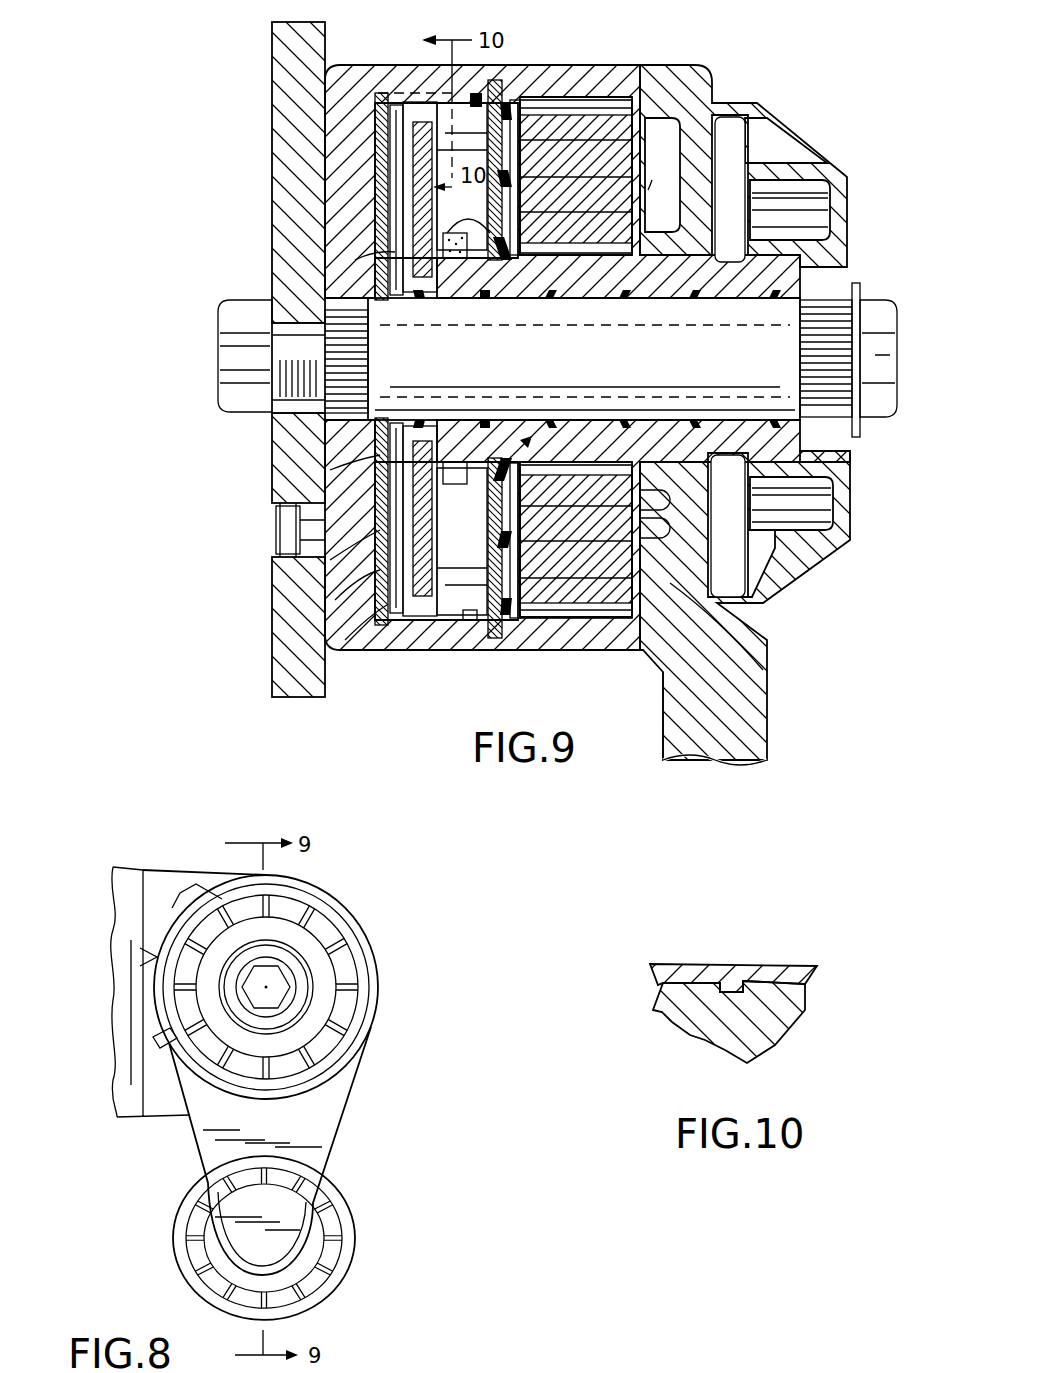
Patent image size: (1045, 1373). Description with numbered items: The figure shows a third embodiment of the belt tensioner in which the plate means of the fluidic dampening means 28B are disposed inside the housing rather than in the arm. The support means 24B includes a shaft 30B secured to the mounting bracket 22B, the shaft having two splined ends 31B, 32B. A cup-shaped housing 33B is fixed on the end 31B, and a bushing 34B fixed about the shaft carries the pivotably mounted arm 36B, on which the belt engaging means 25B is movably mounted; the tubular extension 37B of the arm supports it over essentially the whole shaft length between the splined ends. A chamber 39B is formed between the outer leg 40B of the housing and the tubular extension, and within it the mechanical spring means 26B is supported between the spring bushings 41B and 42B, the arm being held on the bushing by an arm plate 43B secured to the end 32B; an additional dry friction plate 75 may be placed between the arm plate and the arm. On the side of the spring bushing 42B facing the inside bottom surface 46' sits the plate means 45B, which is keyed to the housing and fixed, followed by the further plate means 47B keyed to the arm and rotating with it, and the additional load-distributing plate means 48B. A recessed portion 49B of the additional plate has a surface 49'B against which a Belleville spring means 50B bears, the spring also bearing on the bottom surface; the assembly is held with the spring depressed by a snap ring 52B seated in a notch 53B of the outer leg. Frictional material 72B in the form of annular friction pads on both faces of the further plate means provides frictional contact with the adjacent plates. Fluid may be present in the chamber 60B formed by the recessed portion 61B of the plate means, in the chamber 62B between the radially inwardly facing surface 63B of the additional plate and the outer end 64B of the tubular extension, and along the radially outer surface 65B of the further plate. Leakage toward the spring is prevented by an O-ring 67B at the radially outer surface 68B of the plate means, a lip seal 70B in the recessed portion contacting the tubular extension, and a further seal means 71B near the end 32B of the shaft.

In FIG. 9, the mounting bracket 22B is at (272, 172).
In FIG. 8, the mounting bracket 22B is at (137, 917).
In FIG. 9, the support means 24B is at (343, 98).
In FIG. 8, the belt engaging means 25B is at (355, 1222).
In FIG. 9, the mechanical spring means 26B is at (630, 100).
In FIG. 9, the fluidic dampening means 28B is at (397, 250).
In FIG. 9, the shaft 30B is at (643, 287).
In FIG. 9, the splined end 31B is at (347, 387).
In FIG. 9, the splined end 32B is at (858, 300).
In FIG. 9, the housing 33B is at (583, 653).
In FIG. 10, the housing 33B is at (773, 962).
In FIG. 9, the bushing 34B is at (683, 300).
In FIG. 9, the arm 36B is at (747, 703).
In FIG. 8, the arm 36B is at (323, 1120).
In FIG. 9, the tubular extension 37B is at (550, 250).
In FIG. 9, the chamber 39B is at (620, 617).
In FIG. 9, the outer leg 40B is at (622, 65).
In FIG. 9, the spring bushing 41B is at (645, 187).
In FIG. 9, the spring bushing 42B is at (502, 104).
In FIG. 9, the arm plate 43B is at (847, 195).
In FIG. 9, the plate means 45B is at (526, 443).
In FIG. 10, the plate means 45B is at (780, 1025).
In FIG. 9, the inside bottom surface 46' is at (374, 161).
In FIG. 9, the further plate means 47B is at (422, 652).
In FIG. 9, the additional load-distributing plate means 48B is at (387, 608).
In FIG. 9, the recessed portion 49B is at (380, 580).
In FIG. 9, the surface of recessed portion 49'B is at (292, 562).
In FIG. 9, the spring means 50B is at (297, 548).
In FIG. 9, the snap ring 52B is at (560, 572).
In FIG. 9, the notch 53B is at (512, 630).
In FIG. 9, the chamber 60B is at (433, 462).
In FIG. 9, the recessed portion 61B is at (460, 262).
In FIG. 9, the chamber 62B is at (300, 527).
In FIG. 9, the radially inwardly facing surface 63B is at (420, 185).
In FIG. 9, the plate 64B is at (400, 490).
In FIG. 9, the radially outer surface 65B is at (402, 647).
In FIG. 9, the O-ring 67B is at (480, 653).
In FIG. 9, the radially outer surface 68B is at (453, 647).
In FIG. 9, the lip seal 70B is at (440, 213).
In FIG. 9, the further seal means 71B is at (838, 438).
In FIG. 9, the frictional material 72B is at (395, 165).
In FIG. 9, the additional dry friction plate 75 is at (712, 103).